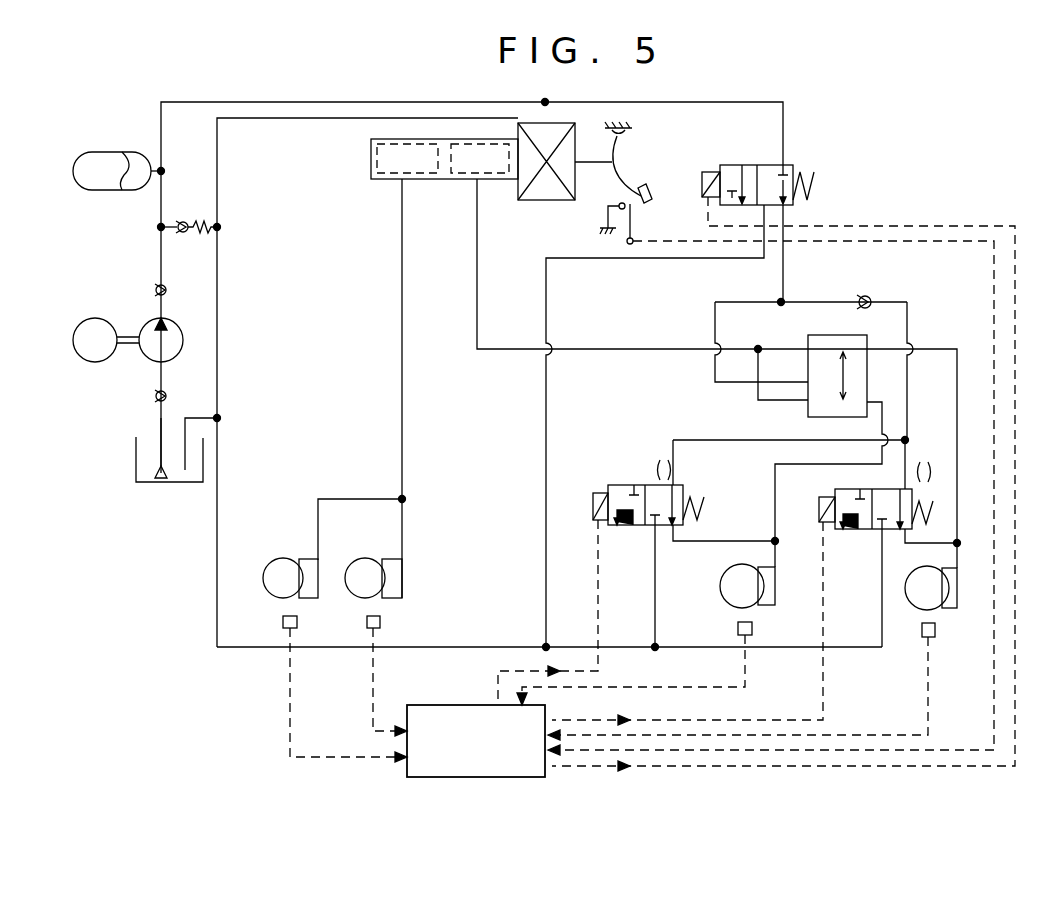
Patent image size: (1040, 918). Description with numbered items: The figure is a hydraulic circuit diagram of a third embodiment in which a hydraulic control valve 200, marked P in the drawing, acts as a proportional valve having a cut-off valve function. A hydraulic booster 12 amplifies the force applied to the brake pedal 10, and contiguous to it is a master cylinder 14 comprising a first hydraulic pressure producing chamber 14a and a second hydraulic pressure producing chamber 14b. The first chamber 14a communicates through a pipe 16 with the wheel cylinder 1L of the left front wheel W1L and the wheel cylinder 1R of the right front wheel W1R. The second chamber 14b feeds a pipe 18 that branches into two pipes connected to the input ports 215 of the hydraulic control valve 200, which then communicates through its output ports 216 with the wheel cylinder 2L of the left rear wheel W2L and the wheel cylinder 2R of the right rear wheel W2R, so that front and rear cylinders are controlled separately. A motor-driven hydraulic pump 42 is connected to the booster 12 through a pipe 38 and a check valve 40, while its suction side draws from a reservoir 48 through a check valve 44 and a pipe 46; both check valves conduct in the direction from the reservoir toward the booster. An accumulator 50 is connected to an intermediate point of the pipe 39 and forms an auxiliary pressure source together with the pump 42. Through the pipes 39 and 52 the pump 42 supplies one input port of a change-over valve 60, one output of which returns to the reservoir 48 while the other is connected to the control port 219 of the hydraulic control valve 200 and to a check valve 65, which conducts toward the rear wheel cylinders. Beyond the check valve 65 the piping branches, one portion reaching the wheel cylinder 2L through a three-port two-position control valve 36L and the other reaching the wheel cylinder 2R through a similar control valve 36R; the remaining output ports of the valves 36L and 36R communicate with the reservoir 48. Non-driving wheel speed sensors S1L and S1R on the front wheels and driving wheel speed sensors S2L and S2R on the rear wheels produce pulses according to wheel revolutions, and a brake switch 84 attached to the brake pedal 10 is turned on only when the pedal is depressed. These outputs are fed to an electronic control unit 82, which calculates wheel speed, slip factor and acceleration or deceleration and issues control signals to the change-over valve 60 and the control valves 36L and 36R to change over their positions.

The brake pedal 10 is at (650, 188).
The hydraulic booster 12 is at (540, 200).
The master cylinder 14 is at (405, 180).
The first hydraulic pressure producing chamber 14a is at (377, 170).
The second hydraulic pressure producing chamber 14b is at (470, 179).
The pipe 16 is at (402, 215).
The pipe 18 is at (478, 262).
The pipe 38 is at (548, 101).
The pipe 39 is at (222, 102).
The check valve 40 is at (155, 293).
The motor-driven hydraulic pump 42 is at (143, 325).
The check valve 44 is at (150, 396).
The pipe 46 is at (155, 425).
The reservoir 48 is at (136, 470).
The accumulator 50 is at (118, 152).
The pipe 52 is at (657, 102).
The change-over valve 60 is at (740, 165).
The check valve 65 is at (865, 296).
The electronic control unit 82 is at (432, 705).
The brake switch 84 is at (634, 235).
The hydraulic control valve 200 is at (842, 335).
The input ports 215 is at (808, 350).
The output ports 216 is at (867, 349).
The control port 219 is at (808, 383).
The proportioning valve P is at (835, 335).
The three-port two-position control valve 36L is at (628, 485).
The three-port two-position control valve 36R is at (918, 489).
The left front wheel W1L is at (278, 560).
The right front wheel W1R is at (368, 560).
The left rear wheel W2L is at (722, 578).
The right rear wheel W2R is at (905, 583).
The wheel cylinder 1L is at (310, 598).
The wheel cylinder 1R is at (392, 578).
The wheel cylinder 2L is at (763, 605).
The wheel cylinder 2R is at (950, 608).
The non driving wheel speed sensor S1L is at (283, 622).
The non driving wheel speed sensor S1R is at (380, 624).
The driving wheel speed sensor S2L is at (738, 628).
The driving wheel speed sensor S2R is at (922, 640).